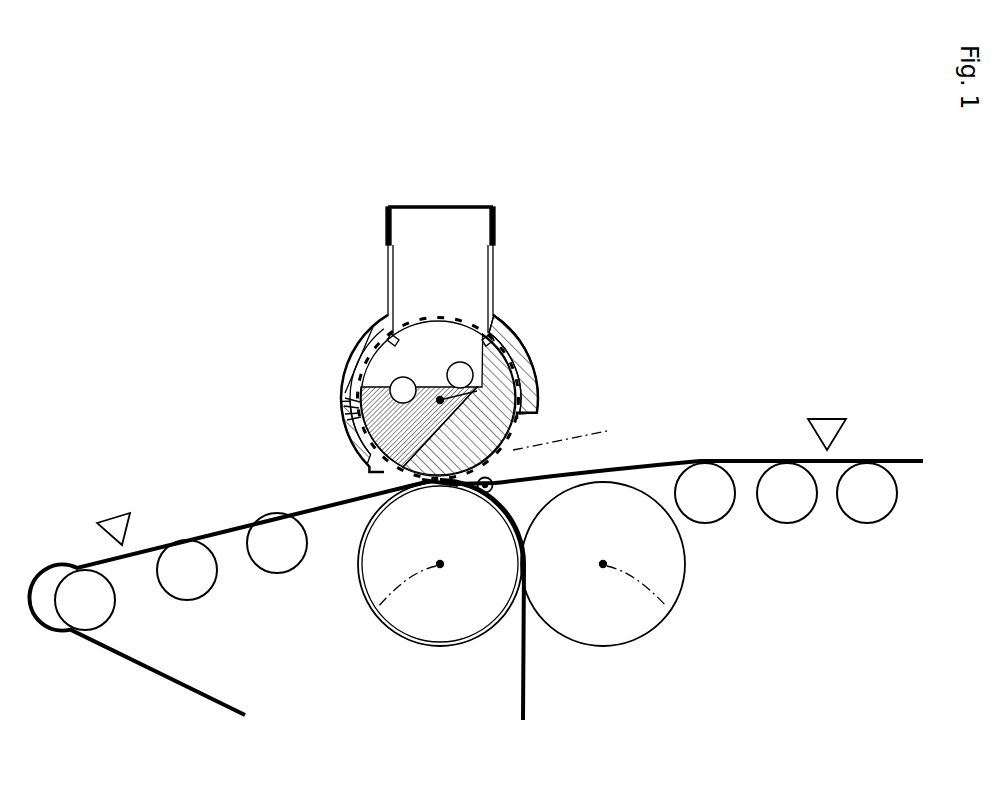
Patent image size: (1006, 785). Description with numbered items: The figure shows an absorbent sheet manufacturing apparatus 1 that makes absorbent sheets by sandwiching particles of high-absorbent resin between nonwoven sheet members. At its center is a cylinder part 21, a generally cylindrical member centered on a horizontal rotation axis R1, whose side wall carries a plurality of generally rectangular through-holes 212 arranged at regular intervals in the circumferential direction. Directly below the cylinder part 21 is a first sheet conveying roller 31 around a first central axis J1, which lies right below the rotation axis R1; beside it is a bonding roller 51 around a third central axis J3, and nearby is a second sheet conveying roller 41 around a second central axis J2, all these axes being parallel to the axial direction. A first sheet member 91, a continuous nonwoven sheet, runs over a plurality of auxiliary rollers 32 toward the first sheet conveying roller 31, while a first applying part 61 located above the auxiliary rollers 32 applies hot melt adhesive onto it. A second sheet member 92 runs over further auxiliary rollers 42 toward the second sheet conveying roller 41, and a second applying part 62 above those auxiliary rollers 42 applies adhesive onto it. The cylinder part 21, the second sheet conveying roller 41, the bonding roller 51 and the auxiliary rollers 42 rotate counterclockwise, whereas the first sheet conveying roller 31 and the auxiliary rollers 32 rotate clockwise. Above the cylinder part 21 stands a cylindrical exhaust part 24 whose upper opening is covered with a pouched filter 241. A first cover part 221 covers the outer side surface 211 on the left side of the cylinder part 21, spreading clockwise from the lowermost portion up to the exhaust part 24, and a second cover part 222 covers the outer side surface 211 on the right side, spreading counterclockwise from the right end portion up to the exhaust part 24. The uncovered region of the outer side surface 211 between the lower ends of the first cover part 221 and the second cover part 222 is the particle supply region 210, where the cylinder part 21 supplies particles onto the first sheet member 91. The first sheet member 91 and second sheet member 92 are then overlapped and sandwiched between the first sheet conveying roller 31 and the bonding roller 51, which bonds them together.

The absorbent sheet manufacturing apparatus 1 is at (125, 239).
The exhaust part 24 is at (388, 273).
The pouched filter 241 is at (388, 207).
The cylinder part 21 is at (425, 317).
The outer side surface 211 is at (358, 408).
The through-holes 212 is at (436, 306).
The first cover part 221 is at (343, 392).
The second cover part 222 is at (525, 364).
The rotation axis R1 is at (532, 378).
The first sheet member 91 is at (310, 498).
The second sheet member 92 is at (642, 461).
The auxiliary rollers 32 is at (76, 592).
The auxiliary rollers 42 is at (710, 503).
The first sheet conveying roller 31 is at (432, 620).
The bonding roller 51 is at (612, 625).
The second sheet conveying roller 41 is at (500, 484).
The particle supply region 210 is at (460, 486).
The first applying part 61 is at (115, 512).
The second applying part 62 is at (826, 416).
The first central axis J1 is at (373, 597).
The second central axis J2 is at (575, 431).
The third central axis J3 is at (680, 604).